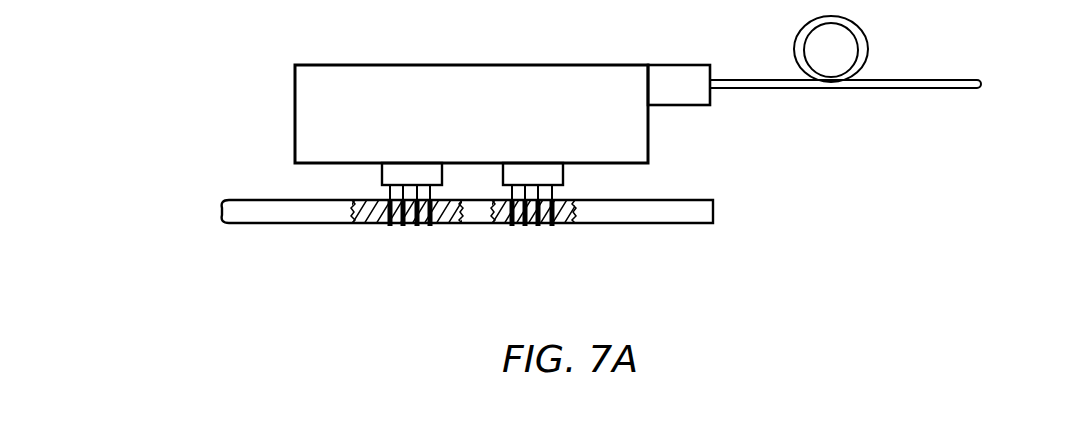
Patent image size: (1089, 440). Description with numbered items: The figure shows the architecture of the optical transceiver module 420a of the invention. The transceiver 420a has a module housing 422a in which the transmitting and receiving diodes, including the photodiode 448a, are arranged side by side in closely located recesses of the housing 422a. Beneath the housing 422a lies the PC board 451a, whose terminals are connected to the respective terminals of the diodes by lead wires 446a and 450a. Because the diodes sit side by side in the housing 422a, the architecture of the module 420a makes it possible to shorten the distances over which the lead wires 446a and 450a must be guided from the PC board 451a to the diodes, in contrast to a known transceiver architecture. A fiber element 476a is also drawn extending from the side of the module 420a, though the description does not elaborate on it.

The optical transceiver module 420a is at (221, 106).
The module housing 422a is at (570, 64).
The photodiode 448a is at (563, 173).
The optical fiber with loop 476a is at (917, 79).
The PC board 451a is at (713, 207).
The lead wires 446a is at (407, 244).
The lead wires 450a is at (533, 244).